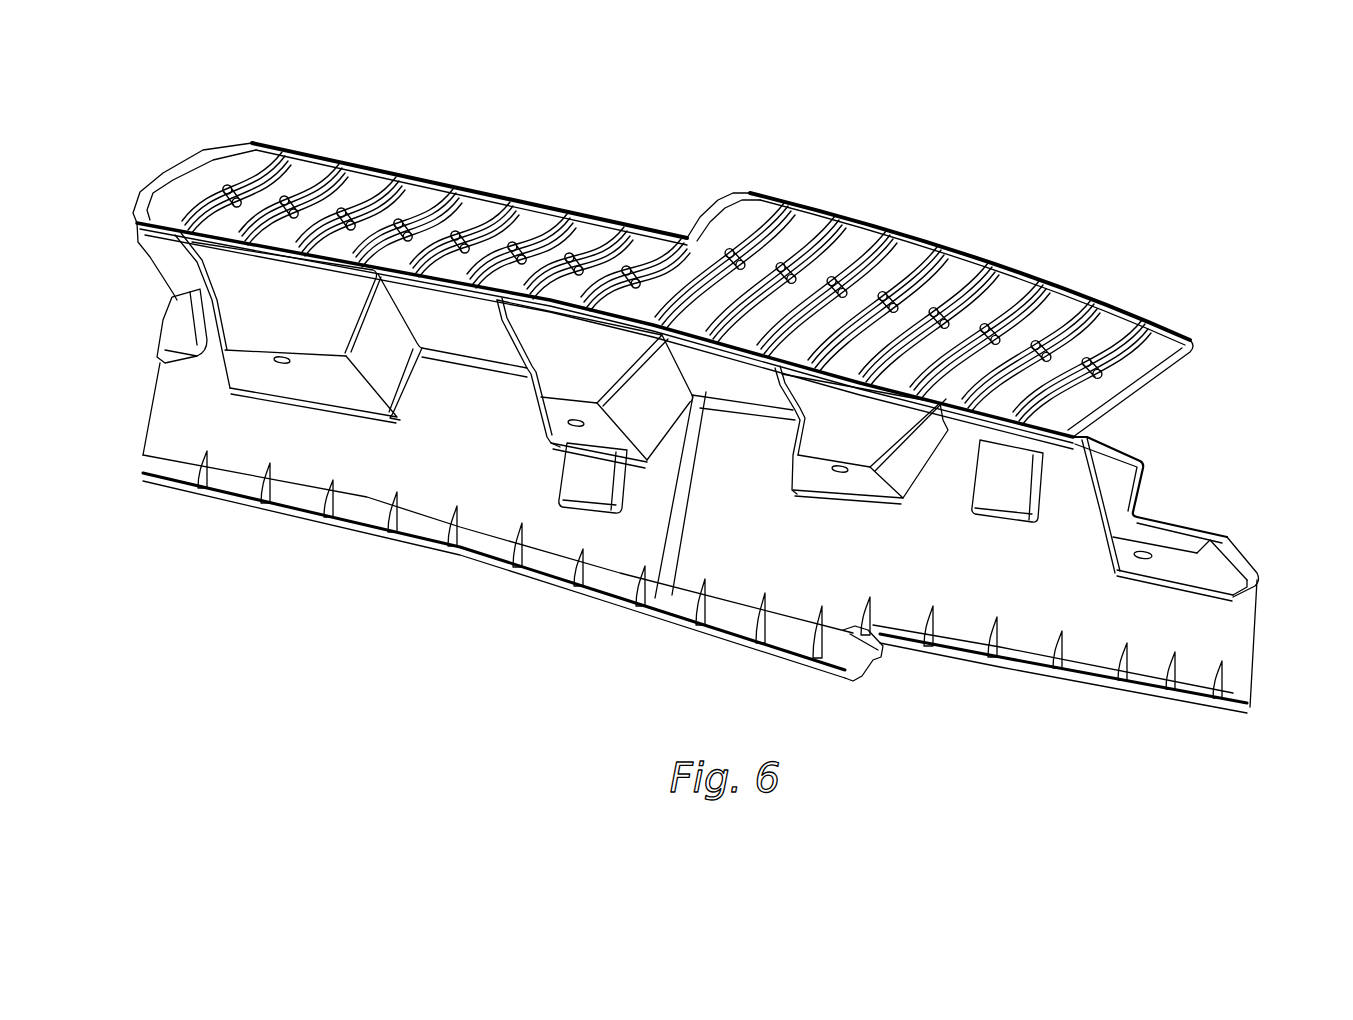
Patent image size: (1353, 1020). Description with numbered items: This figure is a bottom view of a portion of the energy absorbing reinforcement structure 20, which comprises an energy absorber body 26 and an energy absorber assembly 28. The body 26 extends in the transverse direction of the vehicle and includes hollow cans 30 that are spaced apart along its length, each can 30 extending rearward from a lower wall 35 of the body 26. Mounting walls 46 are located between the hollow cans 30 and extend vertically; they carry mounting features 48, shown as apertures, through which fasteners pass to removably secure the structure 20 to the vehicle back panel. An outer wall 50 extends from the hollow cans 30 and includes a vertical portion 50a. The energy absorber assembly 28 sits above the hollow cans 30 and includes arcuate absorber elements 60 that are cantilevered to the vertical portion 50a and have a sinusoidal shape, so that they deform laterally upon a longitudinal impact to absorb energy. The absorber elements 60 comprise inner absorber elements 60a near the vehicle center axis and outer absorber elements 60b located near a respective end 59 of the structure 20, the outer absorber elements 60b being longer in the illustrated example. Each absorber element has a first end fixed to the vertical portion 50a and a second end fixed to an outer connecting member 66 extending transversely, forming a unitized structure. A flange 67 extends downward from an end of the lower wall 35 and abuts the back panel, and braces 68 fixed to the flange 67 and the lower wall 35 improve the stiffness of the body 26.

The energy absorbing reinforcement structure 20 is at (700, 426).
The energy absorber body 26 is at (352, 539).
The energy absorber assembly 28 is at (505, 191).
The hollow cans 30 is at (676, 483).
The lower wall 35 is at (1033, 605).
The mounting walls 46 is at (250, 367).
The mounting features 48 is at (288, 364).
The outer wall 50 is at (1119, 444).
The vertical portion 50a is at (212, 235).
The ends 59 is at (1257, 567).
The absorber elements 60 is at (553, 226).
The inner absorber elements 60a is at (436, 188).
The outer absorber elements 60b is at (1073, 332).
The outer connecting member 66 is at (983, 251).
The flange 67 is at (1098, 673).
The braces 68 is at (1177, 667).